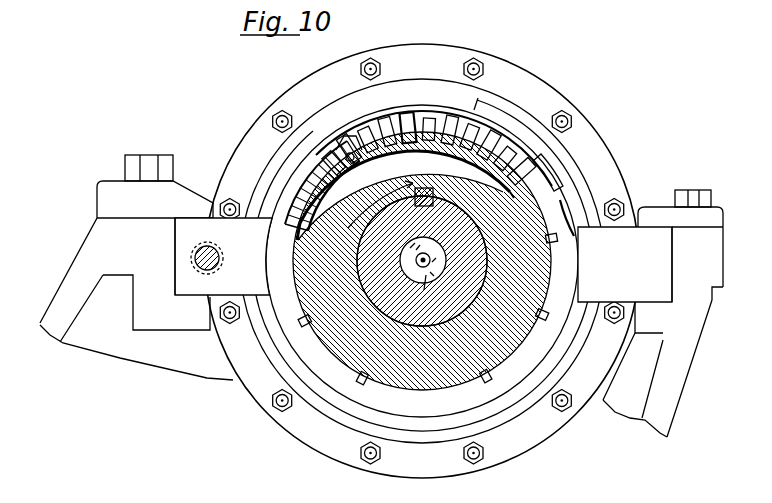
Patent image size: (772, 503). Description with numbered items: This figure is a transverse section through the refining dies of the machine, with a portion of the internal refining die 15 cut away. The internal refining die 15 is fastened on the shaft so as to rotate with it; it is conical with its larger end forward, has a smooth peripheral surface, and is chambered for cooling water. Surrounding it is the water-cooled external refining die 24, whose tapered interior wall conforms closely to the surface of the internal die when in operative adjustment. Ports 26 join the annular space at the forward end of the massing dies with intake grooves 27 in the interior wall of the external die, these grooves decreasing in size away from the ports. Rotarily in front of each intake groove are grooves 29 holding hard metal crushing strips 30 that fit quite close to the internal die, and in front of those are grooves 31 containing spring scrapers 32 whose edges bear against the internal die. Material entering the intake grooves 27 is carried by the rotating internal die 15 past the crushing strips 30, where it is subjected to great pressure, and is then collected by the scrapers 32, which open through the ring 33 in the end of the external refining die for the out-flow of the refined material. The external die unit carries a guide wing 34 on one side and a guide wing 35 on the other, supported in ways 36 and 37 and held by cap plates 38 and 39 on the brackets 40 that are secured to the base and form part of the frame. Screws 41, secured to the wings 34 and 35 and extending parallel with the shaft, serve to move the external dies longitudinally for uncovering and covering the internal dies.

The internal refining die 15 is at (400, 380).
The external refining die 24 is at (470, 122).
The ports 26 is at (338, 170).
The intake grooves 27 is at (357, 155).
The grooves 29 is at (388, 148).
The crushing strips 30 is at (372, 204).
The grooves 31 is at (412, 150).
The spring scrapers 32 is at (412, 152).
The ring 33 is at (545, 173).
The guide wing 34 is at (223, 256).
The guide wing 35 is at (638, 240).
The way 36 is at (176, 297).
The way 37 is at (655, 303).
The cap plate 38 is at (126, 239).
The cap plate 39 is at (680, 246).
The brackets 40 is at (165, 372).
The screws 41 is at (194, 258).